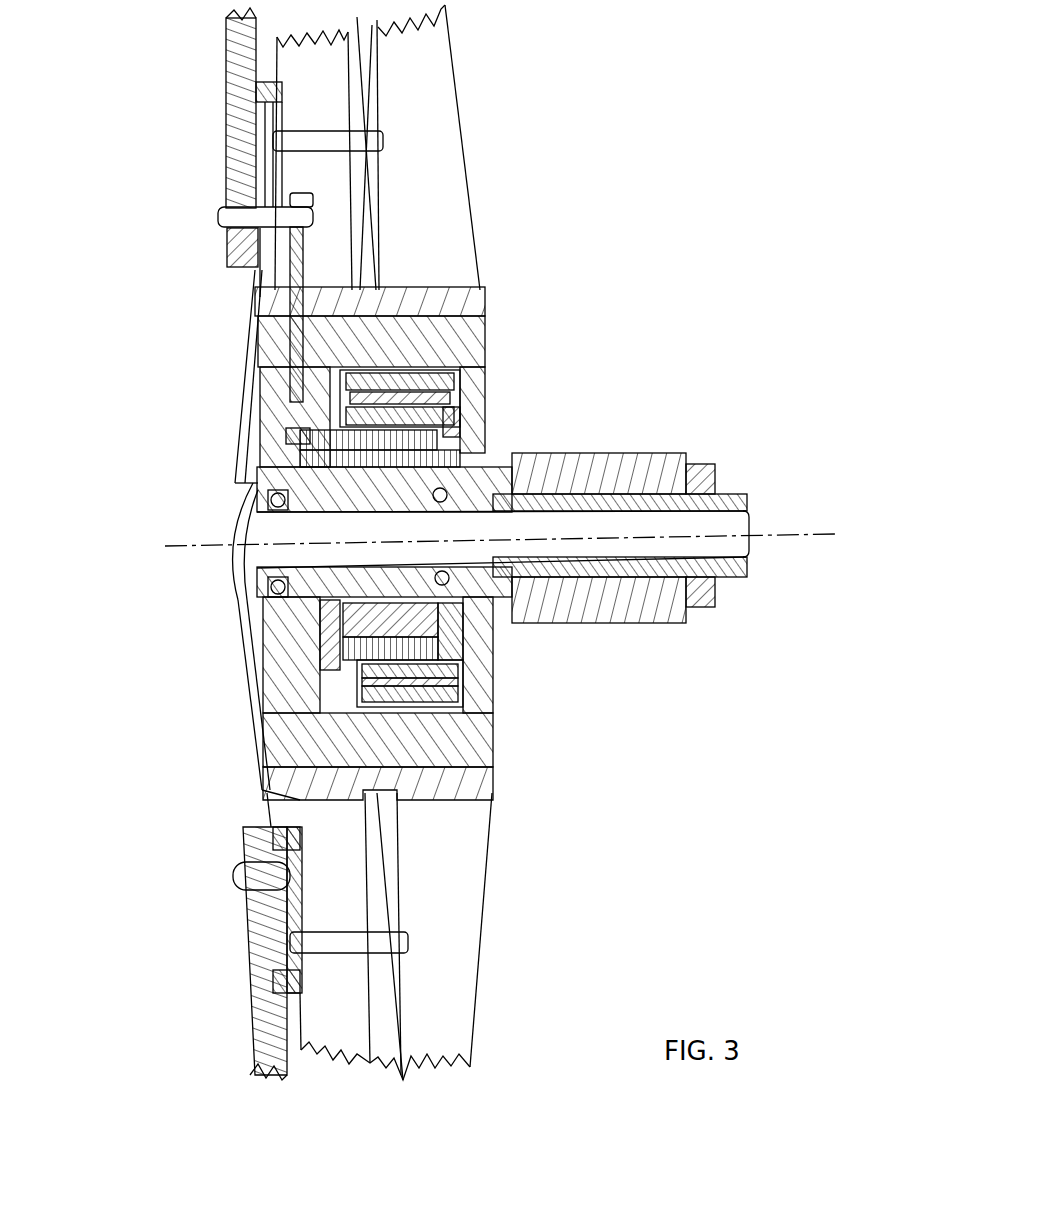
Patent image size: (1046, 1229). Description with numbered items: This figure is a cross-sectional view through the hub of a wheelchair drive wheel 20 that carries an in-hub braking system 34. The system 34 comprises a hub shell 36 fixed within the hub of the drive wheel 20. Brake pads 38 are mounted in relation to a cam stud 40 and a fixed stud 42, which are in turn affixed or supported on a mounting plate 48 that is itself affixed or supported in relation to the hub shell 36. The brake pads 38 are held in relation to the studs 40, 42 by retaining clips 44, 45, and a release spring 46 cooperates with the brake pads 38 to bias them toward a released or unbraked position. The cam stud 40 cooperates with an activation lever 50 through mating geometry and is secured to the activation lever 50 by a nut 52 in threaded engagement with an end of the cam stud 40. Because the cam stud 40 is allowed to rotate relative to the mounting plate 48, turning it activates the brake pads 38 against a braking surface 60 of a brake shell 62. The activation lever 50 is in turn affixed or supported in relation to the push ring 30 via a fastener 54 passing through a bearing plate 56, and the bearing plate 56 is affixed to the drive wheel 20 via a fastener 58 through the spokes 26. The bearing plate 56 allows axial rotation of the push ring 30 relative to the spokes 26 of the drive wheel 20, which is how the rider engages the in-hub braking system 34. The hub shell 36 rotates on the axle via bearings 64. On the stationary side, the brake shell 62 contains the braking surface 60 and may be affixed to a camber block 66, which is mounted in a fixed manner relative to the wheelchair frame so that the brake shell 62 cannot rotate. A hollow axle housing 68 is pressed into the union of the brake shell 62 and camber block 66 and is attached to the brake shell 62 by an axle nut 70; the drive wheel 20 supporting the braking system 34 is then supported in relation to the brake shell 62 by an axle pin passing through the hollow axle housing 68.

The drive wheel 20 is at (265, 782).
The spokes 26 is at (445, 165).
The push ring 30 is at (228, 88).
The in-hub braking system 34 is at (218, 377).
The hub shell 36 is at (277, 652).
The brake pads 38 is at (456, 378).
The cam stud 40 is at (450, 435).
The fixed stud 42 is at (442, 642).
The retaining clip 44 is at (450, 448).
The retaining clip 45 is at (448, 628).
The release spring 46 is at (340, 460).
The mounting plate 48 is at (340, 620).
The activation lever 50 is at (297, 332).
The nut 52 is at (340, 421).
The fastener 54 is at (226, 213).
The bearing plate 56 is at (255, 160).
The fastener 58 is at (380, 134).
The braking surface 60 is at (468, 760).
The brake shell 62 is at (452, 692).
The bearings 64 is at (262, 595).
The camber block 66 is at (612, 607).
The hollow axle housing 68 is at (725, 492).
The axle nut 70 is at (712, 605).